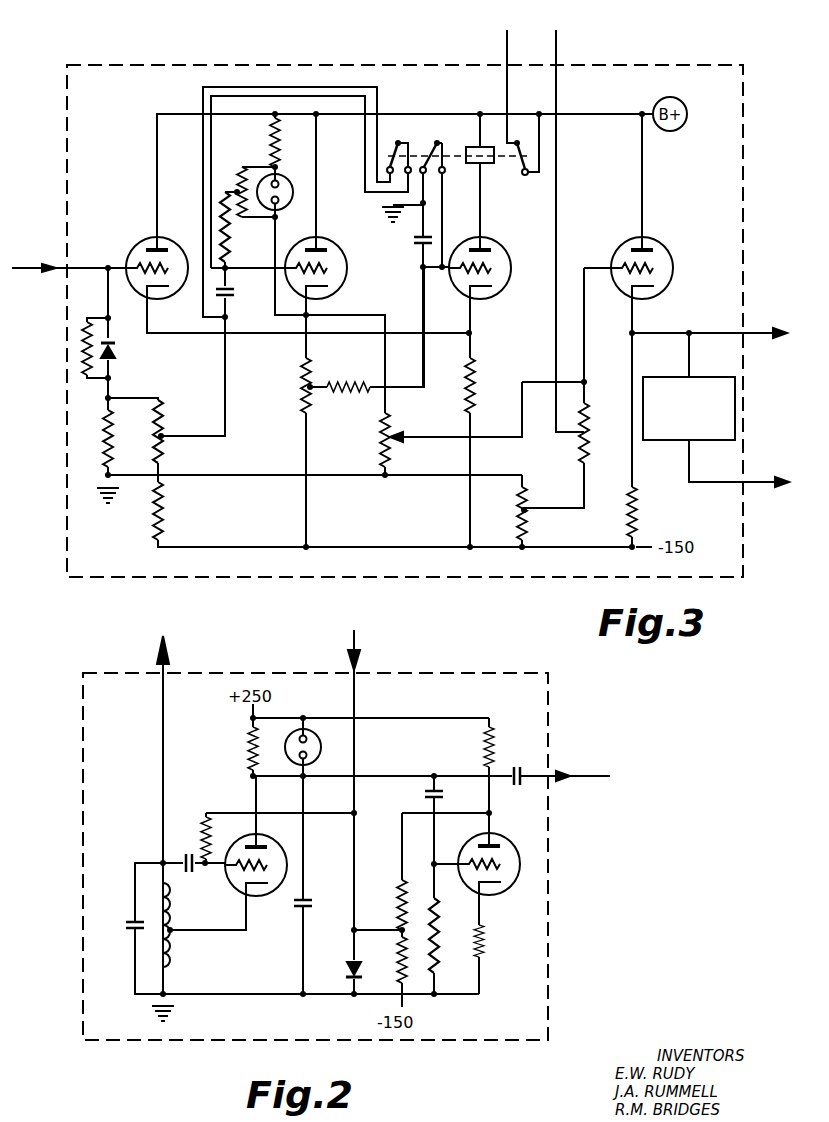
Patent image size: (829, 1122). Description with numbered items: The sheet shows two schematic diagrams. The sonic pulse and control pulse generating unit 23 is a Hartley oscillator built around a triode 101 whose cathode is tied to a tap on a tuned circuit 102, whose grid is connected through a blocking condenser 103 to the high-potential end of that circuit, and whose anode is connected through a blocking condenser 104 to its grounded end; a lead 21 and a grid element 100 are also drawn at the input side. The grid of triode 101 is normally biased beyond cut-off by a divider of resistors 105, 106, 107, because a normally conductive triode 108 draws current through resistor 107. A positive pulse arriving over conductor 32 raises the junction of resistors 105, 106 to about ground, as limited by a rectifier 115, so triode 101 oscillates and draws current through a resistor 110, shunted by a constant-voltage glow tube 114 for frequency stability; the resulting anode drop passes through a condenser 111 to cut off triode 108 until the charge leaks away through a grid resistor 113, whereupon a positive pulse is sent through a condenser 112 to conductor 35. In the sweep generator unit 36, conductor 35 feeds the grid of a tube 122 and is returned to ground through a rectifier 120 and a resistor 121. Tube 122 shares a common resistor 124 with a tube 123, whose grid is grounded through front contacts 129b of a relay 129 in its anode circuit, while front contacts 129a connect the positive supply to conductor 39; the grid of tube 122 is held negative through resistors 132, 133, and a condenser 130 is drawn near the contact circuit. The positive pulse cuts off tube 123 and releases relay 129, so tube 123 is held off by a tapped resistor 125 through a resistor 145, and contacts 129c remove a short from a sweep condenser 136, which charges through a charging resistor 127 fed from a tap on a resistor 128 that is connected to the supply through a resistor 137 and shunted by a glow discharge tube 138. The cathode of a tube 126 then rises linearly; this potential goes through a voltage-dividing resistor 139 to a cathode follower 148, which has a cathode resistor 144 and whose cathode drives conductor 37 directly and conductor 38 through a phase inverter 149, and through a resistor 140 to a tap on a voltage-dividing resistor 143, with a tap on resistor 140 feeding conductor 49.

In FIG. 3, the conductor 35 is at (40, 260).
In FIG. 2, the conductor 35 is at (586, 775).
In FIG. 3, the sweep generator unit 36 is at (340, 65).
In FIG. 3, the conductor 37 is at (763, 333).
In FIG. 3, the conductor 38 is at (760, 482).
In FIG. 3, the conductor 39 is at (506, 50).
In FIG. 3, the conductor 49 is at (557, 53).
In FIG. 3, the rectifier 120 is at (114, 352).
In FIG. 3, the resistor 121 is at (104, 437).
In FIG. 3, the tube 122 is at (141, 244).
In FIG. 3, the tube 123 is at (494, 246).
In FIG. 3, the common resistor 124 is at (477, 386).
In FIG. 3, the tapped resistor 125 is at (303, 380).
In FIG. 3, the tube 126 is at (322, 246).
In FIG. 3, the charging resistor 127 is at (228, 238).
In FIG. 3, the resistor 128 is at (236, 182).
In FIG. 3, the relay 129 is at (485, 170).
In FIG. 3, the front contacts 129a is at (520, 138).
In FIG. 3, the front contacts 129b is at (439, 138).
In FIG. 3, the contacts 129c is at (400, 138).
In FIG. 3, the capacitor 130 is at (411, 247).
In FIG. 3, the resistor 132 is at (164, 426).
In FIG. 3, the resistor 133 is at (154, 514).
In FIG. 3, the sweep condenser 136 is at (229, 296).
In FIG. 3, the resistor 137 is at (270, 140).
In FIG. 3, the constant voltage glow discharge tube 138 is at (300, 167).
In FIG. 3, the voltage-dividing resistor 139 is at (392, 426).
In FIG. 3, the resistor 140 is at (578, 449).
In FIG. 3, the voltage-dividing resistor 143 is at (519, 503).
In FIG. 3, the cathode resistor 144 is at (637, 522).
In FIG. 3, the resistor 145 is at (345, 385).
In FIG. 3, the cathode follower 148 is at (661, 251).
In FIG. 3, the phase inverter 149 is at (716, 368).
In FIG. 2, the output lead 21 is at (162, 662).
In FIG. 2, the sonic pulse and control pulse generating unit 23 is at (249, 672).
In FIG. 2, the conductor 32 is at (356, 647).
In FIG. 2, the grid resistor 100 is at (205, 817).
In FIG. 2, the triode 101 is at (232, 893).
In FIG. 2, the tuned circuit 102 is at (173, 940).
In FIG. 2, the blocking condenser 103 is at (185, 872).
In FIG. 2, the blocking condenser 104 is at (308, 898).
In FIG. 2, the resistor 105 is at (397, 960).
In FIG. 2, the resistor 106 is at (398, 897).
In FIG. 2, the resistor 107 is at (494, 741).
In FIG. 2, the triode 108 is at (505, 841).
In FIG. 2, the resistor 110 is at (248, 750).
In FIG. 2, the condenser 111 is at (425, 797).
In FIG. 2, the condenser 112 is at (518, 767).
In FIG. 2, the grid resistor 113 is at (440, 905).
In FIG. 2, the constant-voltage glow tube 114 is at (315, 752).
In FIG. 2, the rectifier 115 is at (347, 965).